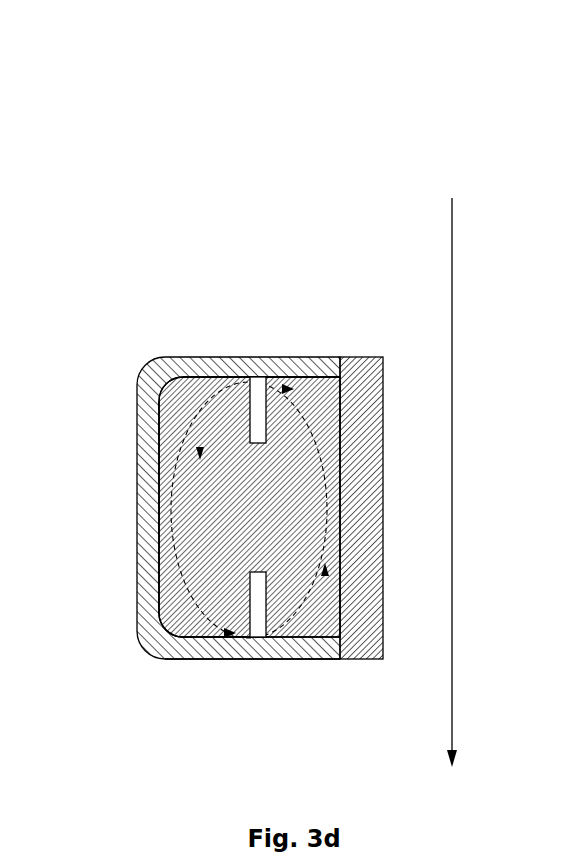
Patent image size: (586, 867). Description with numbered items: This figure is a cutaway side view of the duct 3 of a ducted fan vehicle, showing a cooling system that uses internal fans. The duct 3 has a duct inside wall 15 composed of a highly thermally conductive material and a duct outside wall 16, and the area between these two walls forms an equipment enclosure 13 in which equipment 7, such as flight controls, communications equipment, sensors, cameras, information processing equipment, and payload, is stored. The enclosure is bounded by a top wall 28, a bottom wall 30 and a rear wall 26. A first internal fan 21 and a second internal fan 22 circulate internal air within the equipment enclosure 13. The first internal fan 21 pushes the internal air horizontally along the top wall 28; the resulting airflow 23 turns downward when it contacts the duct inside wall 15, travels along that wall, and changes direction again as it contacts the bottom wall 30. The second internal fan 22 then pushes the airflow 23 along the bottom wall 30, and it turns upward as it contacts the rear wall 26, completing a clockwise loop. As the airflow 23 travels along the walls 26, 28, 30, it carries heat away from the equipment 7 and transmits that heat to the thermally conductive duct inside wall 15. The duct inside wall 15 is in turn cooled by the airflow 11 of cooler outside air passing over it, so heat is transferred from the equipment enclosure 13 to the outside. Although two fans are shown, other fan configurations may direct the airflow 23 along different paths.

The duct 3 is at (115, 125).
The equipment 7 is at (193, 517).
The airflow 11 is at (451, 313).
The equipment enclosure 13 is at (312, 378).
The duct inside wall 15 is at (383, 403).
The duct outside wall 16 is at (230, 650).
The first internal fan 21 is at (257, 378).
The second internal fan 22 is at (258, 625).
The airflow 23 is at (162, 613).
The rear wall 26 is at (158, 530).
The top wall 28 is at (183, 358).
The bottom wall 30 is at (246, 637).